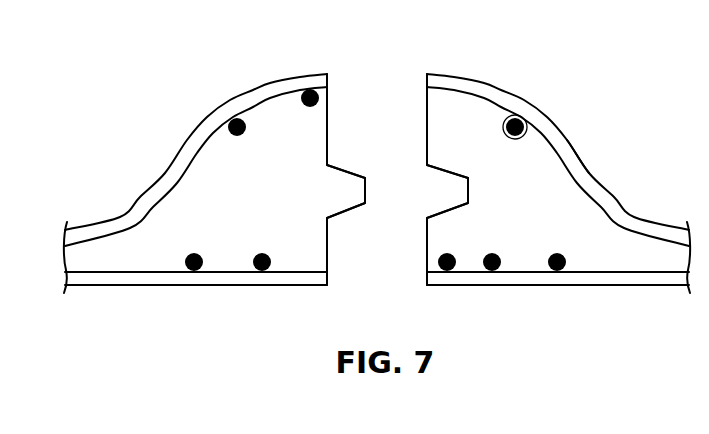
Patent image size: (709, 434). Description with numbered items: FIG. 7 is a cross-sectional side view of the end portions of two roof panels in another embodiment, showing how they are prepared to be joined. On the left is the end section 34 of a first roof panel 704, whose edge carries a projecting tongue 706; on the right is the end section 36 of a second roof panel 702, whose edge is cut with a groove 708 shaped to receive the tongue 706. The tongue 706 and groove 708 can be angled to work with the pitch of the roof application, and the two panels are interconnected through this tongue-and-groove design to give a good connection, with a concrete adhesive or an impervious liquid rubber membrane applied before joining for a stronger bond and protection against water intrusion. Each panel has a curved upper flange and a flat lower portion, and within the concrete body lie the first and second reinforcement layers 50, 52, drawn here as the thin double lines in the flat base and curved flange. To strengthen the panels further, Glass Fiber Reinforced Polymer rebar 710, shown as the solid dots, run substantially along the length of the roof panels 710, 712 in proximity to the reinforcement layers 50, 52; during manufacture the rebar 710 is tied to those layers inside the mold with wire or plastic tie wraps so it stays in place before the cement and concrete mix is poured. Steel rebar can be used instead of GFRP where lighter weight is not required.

The end section 34 is at (328, 98).
The end section 36 is at (426, 100).
The first reinforcement layer 50 is at (603, 208).
The second reinforcement layer 52 is at (615, 274).
The second roof panel 702 is at (574, 154).
The first roof panel 704 is at (167, 175).
The tongue 706 is at (347, 170).
The groove 708 is at (452, 192).
The GFRP rebar 710 is at (303, 93).
The roof panel 712 is at (507, 116).